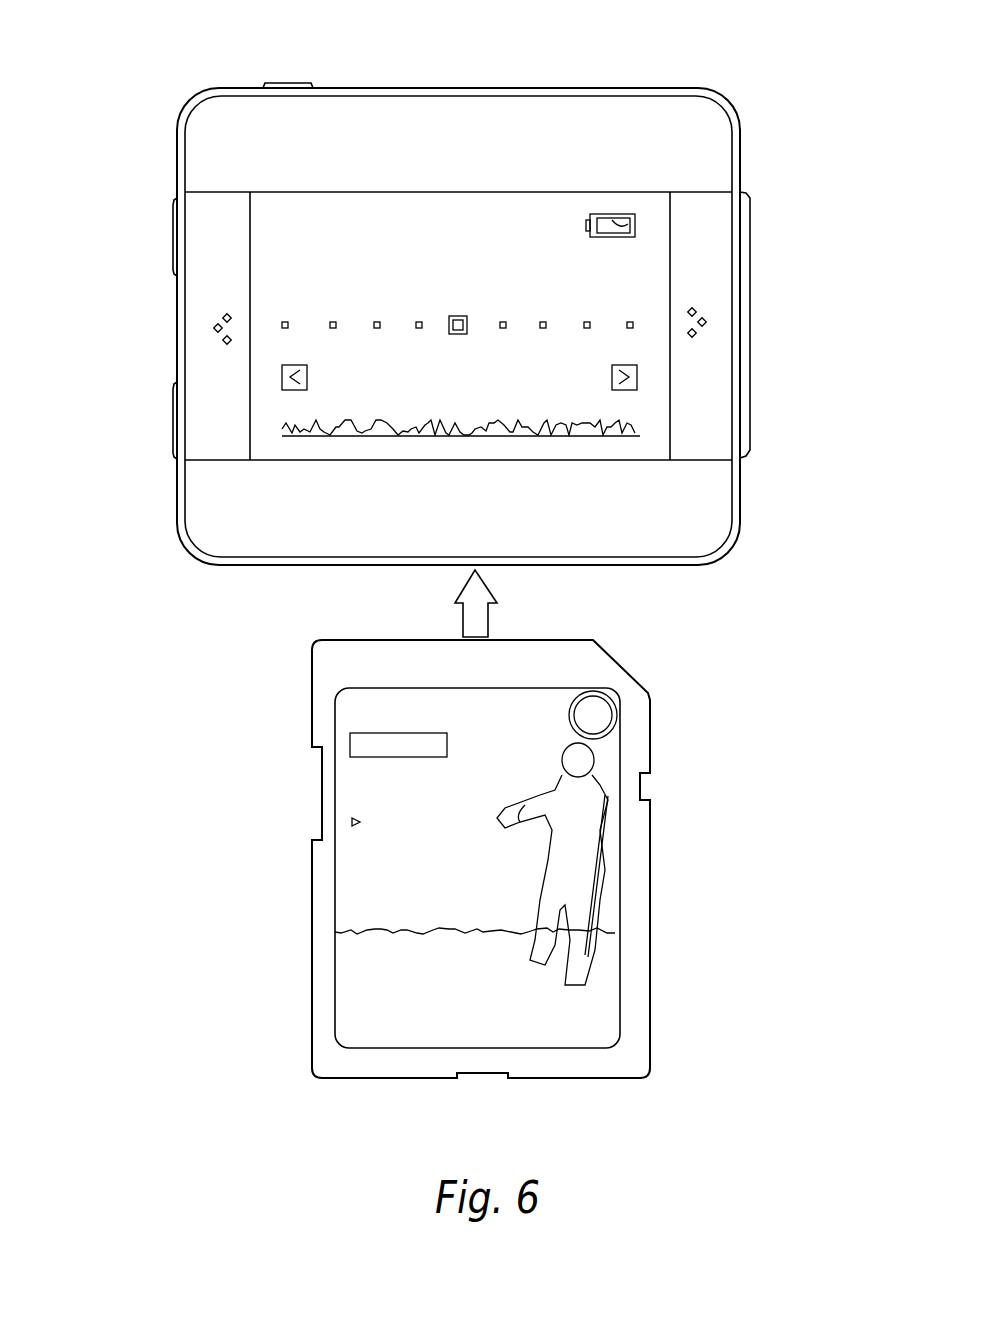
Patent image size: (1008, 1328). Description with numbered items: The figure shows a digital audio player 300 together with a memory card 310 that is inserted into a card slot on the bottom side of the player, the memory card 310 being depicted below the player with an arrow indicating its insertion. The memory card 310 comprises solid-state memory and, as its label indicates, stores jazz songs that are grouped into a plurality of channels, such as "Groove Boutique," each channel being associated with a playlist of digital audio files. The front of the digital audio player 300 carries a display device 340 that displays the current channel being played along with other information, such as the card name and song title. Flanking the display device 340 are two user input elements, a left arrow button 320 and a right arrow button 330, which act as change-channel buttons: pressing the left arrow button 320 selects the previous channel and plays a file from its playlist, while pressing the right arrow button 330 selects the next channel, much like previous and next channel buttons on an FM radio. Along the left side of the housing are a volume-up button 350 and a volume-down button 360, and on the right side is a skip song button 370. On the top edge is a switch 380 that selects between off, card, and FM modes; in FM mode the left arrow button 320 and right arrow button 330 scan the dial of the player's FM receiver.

The digital audio player 300 is at (735, 112).
The memory card 310 is at (655, 905).
The left arrow button 320 is at (207, 293).
The right arrow button 330 is at (715, 388).
The display device 340 is at (464, 297).
The volume-up button 350 is at (175, 243).
The volume-down button 360 is at (175, 420).
The skip song button 370 is at (750, 310).
The switch 380 is at (298, 83).